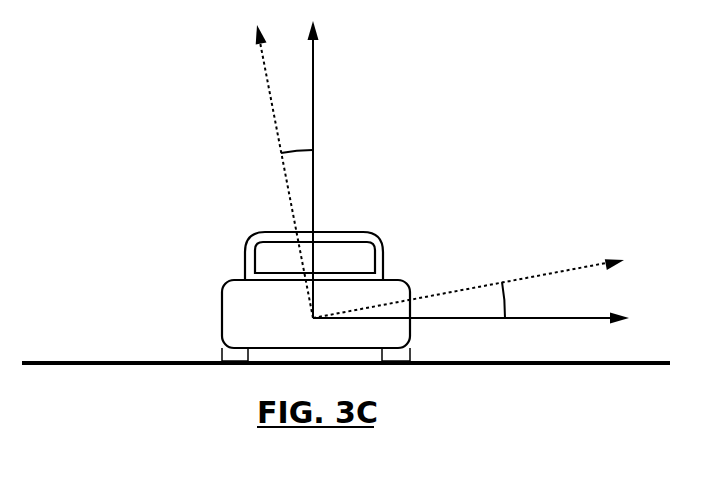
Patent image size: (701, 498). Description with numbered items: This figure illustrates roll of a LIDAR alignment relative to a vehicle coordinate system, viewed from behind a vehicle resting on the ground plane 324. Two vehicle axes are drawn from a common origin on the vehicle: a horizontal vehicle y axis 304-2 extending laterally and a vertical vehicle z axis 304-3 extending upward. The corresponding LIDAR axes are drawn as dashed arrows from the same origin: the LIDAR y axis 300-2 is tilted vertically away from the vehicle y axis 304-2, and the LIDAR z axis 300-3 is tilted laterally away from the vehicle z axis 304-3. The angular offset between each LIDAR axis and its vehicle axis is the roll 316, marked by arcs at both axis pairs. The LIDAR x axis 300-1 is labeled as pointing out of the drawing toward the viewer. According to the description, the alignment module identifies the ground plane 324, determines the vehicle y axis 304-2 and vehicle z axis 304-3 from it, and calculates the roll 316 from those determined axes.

The LIDAR x axis 300-1 is at (64, 0).
The LIDAR y axis 300-2 is at (568, 270).
The LIDAR z axis 300-3 is at (268, 100).
The vehicle y axis 304-2 is at (558, 320).
The vehicle z axis 304-3 is at (316, 87).
The roll 316 is at (297, 149).
The ground plane 324 is at (75, 361).